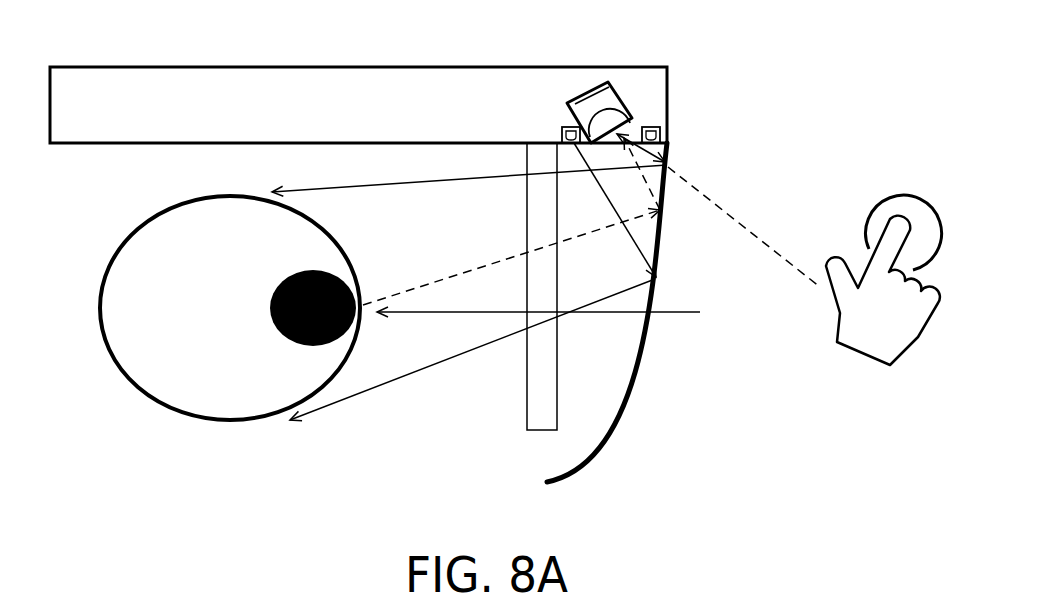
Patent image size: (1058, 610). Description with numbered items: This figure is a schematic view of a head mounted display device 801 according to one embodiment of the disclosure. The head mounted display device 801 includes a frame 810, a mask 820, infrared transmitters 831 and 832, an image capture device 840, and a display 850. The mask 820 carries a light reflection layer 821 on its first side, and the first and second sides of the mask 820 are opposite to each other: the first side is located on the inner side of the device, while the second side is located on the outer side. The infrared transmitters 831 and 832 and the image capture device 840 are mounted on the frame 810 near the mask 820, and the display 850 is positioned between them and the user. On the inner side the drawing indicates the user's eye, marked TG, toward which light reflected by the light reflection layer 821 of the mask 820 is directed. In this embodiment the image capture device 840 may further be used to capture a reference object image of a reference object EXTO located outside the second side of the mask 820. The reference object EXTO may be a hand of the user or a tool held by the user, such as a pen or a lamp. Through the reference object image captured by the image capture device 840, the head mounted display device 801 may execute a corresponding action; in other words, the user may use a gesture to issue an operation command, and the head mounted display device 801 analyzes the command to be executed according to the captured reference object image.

The head mounted display device 801 is at (953, 530).
The frame 810 is at (258, 67).
The mask 820 is at (612, 430).
The light reflection layer 821 is at (656, 237).
The infrared transmitter 831 is at (562, 129).
The infrared transmitter 832 is at (661, 130).
The image capture device 840 is at (587, 93).
The display 850 is at (527, 393).
The target (eye) TG is at (120, 392).
The reference object EXTO is at (890, 335).